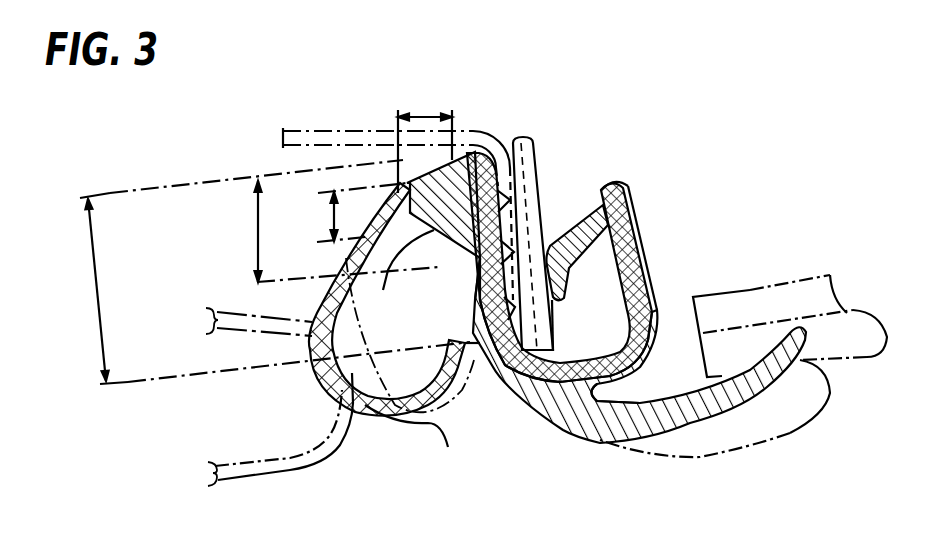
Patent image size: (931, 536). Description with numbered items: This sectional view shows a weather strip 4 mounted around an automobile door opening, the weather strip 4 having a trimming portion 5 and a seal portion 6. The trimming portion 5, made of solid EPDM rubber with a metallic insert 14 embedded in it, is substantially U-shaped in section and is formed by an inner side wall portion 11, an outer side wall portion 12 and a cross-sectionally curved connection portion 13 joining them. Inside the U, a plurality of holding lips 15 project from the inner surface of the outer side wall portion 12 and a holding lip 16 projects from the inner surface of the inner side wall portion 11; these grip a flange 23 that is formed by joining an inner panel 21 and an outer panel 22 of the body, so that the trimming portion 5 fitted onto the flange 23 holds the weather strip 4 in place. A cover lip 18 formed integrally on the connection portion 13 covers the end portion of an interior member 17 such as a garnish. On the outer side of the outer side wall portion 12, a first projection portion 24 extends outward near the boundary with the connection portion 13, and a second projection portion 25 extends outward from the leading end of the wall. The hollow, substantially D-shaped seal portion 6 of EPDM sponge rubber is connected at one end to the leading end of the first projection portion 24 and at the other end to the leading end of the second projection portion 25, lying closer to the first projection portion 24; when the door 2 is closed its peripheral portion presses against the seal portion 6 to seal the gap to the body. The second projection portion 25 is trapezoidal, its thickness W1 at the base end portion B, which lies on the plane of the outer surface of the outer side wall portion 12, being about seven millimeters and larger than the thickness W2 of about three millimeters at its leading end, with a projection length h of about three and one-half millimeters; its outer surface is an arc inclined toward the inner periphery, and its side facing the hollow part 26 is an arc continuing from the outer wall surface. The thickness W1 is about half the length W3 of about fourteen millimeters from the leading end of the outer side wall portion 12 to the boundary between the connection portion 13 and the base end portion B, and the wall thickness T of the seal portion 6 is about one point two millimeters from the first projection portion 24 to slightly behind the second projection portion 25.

The door 2 is at (292, 475).
The weather strip 4 is at (372, 348).
The trimming portion 5 is at (606, 325).
The seal portion 6 is at (316, 314).
The inner side wall portion 11 is at (650, 278).
The outer side wall portion 12 is at (485, 280).
The connection portion 13 is at (600, 381).
The metallic insert 14 is at (628, 213).
The holding lips 15 is at (497, 310).
The holding lip 16 is at (567, 233).
The interior member 17 is at (860, 355).
The cover lip 18 is at (628, 446).
The inner panel 21 is at (537, 154).
The outer panel 22 is at (343, 128).
The flange 23 is at (560, 306).
The first projection portion 24 is at (455, 332).
The second projection portion 25 is at (401, 267).
The hollow part 26 is at (380, 487).
The base end portion B is at (481, 138).
The thickness of the seal portion T is at (314, 369).
The projection length h is at (425, 140).
The thickness of the base end portion W1 is at (328, 231).
The thickness of the leading end portion W2 is at (346, 212).
The length from the leading end of the outer side wall to the boundary of the connec W3 is at (264, 272).